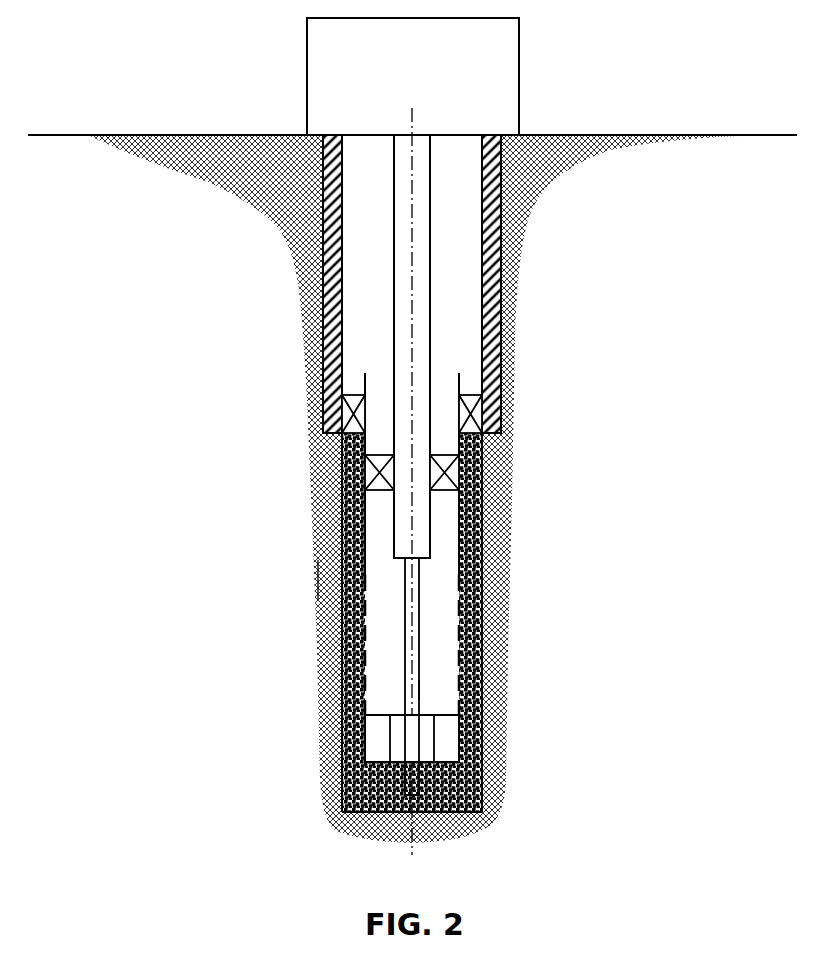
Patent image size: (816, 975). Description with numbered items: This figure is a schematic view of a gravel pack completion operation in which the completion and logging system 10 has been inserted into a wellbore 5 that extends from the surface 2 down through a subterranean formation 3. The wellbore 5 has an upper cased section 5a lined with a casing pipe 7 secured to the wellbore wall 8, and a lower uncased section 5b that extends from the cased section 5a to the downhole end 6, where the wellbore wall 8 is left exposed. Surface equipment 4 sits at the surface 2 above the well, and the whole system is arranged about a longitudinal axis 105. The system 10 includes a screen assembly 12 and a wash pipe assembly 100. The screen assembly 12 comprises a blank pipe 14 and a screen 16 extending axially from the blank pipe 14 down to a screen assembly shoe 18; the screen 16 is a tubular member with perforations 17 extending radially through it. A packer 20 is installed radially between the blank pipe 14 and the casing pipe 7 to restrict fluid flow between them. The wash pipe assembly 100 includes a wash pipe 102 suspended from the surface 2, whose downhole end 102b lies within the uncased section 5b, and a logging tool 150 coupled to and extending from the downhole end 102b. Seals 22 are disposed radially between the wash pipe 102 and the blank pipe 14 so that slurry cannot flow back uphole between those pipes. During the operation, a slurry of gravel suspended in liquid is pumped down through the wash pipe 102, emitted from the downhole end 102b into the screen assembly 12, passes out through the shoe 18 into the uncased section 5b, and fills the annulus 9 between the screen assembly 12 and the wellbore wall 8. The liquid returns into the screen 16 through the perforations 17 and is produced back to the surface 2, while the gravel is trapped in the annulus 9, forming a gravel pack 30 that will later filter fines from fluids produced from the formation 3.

The surface 2 is at (716, 134).
The subterranean formation 3 is at (323, 740).
The surface equipment 4 is at (307, 47).
The wellbore 5 is at (487, 485).
The cased section 5a is at (312, 291).
The uncased section 5b is at (328, 578).
The downhole end 6 is at (343, 814).
The casing pipe 7 is at (502, 283).
The wellbore wall 8 is at (478, 618).
The annulus 9 is at (348, 668).
The completion and logging system 10 is at (480, 540).
The screen assembly 12 is at (469, 448).
The blank pipe 14 is at (360, 382).
The screen 16 is at (361, 519).
The perforations 17 is at (361, 632).
The screen assembly shoe 18 is at (462, 747).
The packer 20 is at (476, 393).
The seals 22 is at (378, 453).
The gravel pack 30 is at (462, 795).
The wash pipe assembly 100 is at (434, 249).
The wash pipe 102 is at (393, 245).
The downhole end 102b is at (438, 564).
The longitudinal axis 105 is at (413, 177).
The logging tool 150 is at (419, 691).